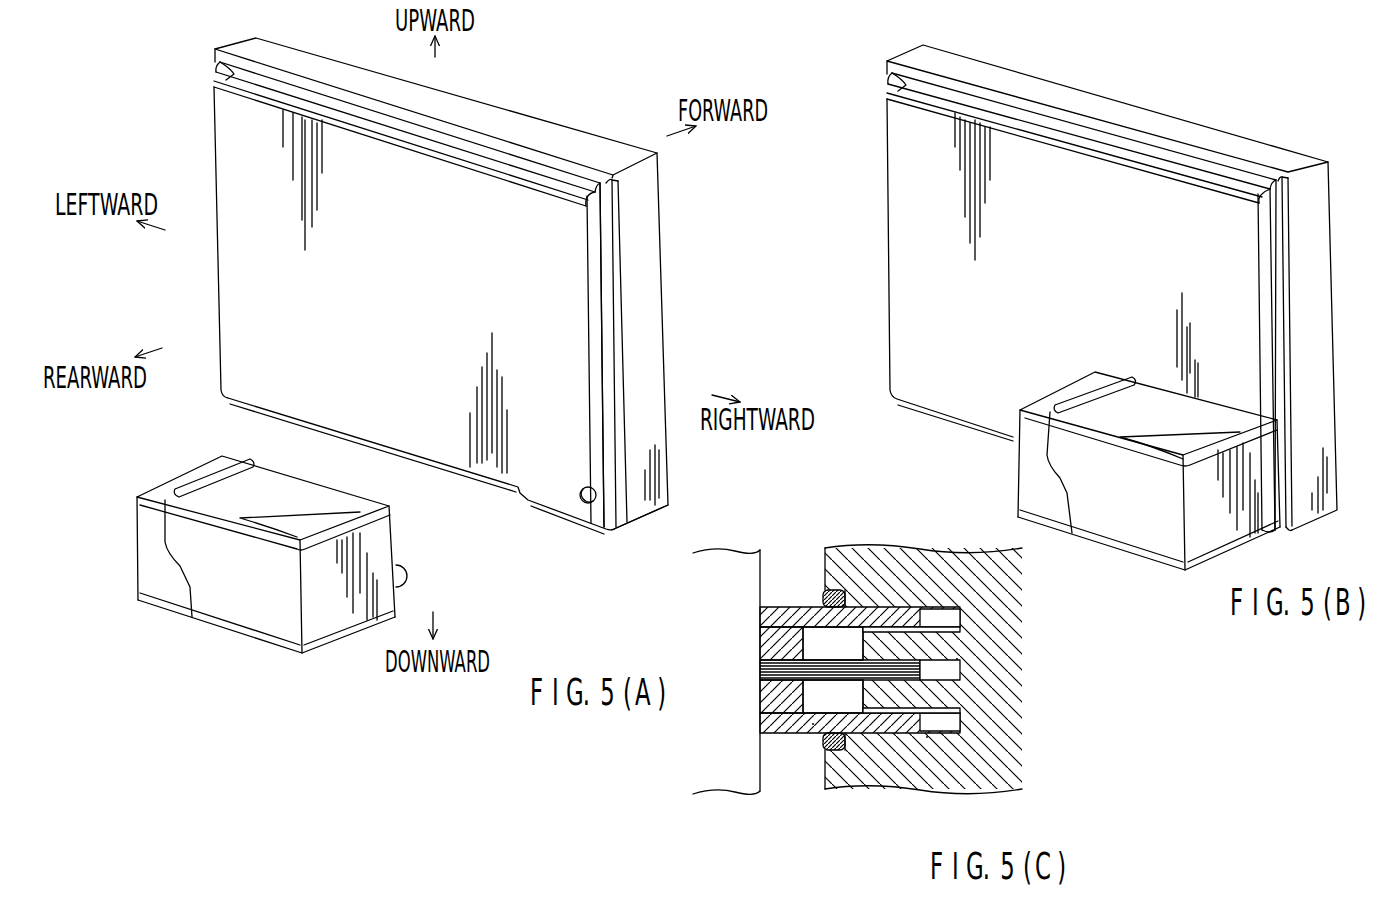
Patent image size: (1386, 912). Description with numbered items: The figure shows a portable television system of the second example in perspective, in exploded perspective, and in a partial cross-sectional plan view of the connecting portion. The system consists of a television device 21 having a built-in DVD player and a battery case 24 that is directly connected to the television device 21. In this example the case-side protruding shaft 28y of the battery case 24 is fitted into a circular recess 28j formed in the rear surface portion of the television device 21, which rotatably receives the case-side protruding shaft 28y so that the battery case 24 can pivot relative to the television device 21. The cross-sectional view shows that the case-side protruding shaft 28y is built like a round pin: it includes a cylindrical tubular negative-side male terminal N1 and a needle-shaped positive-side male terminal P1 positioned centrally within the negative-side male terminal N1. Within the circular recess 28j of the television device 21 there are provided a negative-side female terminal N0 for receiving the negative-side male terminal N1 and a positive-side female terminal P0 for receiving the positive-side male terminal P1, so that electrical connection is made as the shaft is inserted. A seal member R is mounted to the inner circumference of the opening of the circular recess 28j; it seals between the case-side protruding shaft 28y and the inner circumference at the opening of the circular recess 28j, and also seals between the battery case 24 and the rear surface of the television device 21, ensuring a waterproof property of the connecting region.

In FIG. 5A, the television device 21 is at (537, 111).
In FIG. 5B, the television device 21 is at (1256, 128).
In FIG. 5C, the television device 21 is at (982, 721).
In FIG. 5A, the battery case 24 is at (215, 450).
In FIG. 5B, the battery case 24 is at (1087, 368).
In FIG. 5C, the battery case 24 is at (714, 798).
In FIG. 5A, the case-side protruding shaft 28y is at (406, 572).
In FIG. 5C, the case-side protruding shaft 28y is at (783, 606).
In FIG. 5A, the circular recess 28j is at (599, 499).
In FIG. 5C, the circular recess 28j is at (851, 628).
In FIG. 5C, the positive-side male terminal P1 is at (813, 667).
In FIG. 5C, the positive-side female terminal P0 is at (958, 658).
In FIG. 5C, the negative-side male terminal N1 is at (813, 725).
In FIG. 5C, the negative-side female terminal N0 is at (927, 738).
In FIG. 5C, the seal member R is at (823, 746).